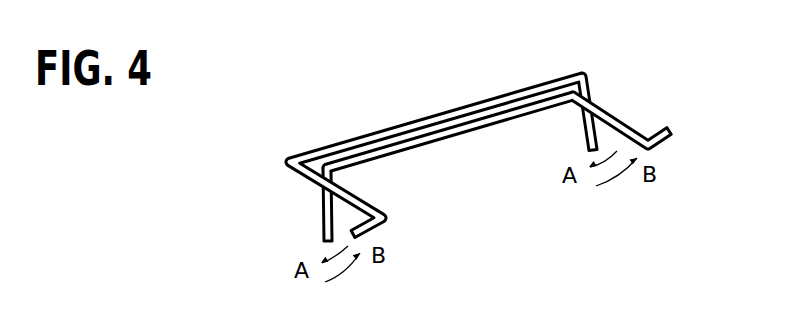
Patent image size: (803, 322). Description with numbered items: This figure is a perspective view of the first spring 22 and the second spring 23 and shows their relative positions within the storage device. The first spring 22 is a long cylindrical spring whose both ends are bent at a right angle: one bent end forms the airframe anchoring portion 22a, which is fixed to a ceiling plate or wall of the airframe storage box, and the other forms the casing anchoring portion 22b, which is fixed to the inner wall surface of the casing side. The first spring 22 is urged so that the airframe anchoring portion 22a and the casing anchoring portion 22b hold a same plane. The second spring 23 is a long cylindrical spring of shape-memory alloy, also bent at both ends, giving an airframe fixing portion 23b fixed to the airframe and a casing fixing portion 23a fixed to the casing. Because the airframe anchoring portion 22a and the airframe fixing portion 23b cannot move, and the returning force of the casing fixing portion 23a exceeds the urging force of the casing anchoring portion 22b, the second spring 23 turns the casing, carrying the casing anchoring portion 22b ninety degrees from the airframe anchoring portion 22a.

The first spring 22 is at (444, 113).
The airframe anchoring portion 22a is at (367, 204).
The casing anchoring portion 22b is at (587, 145).
The second spring 23 is at (390, 146).
The casing fixing portion 23a is at (323, 228).
The airframe fixing portion 23b is at (617, 118).